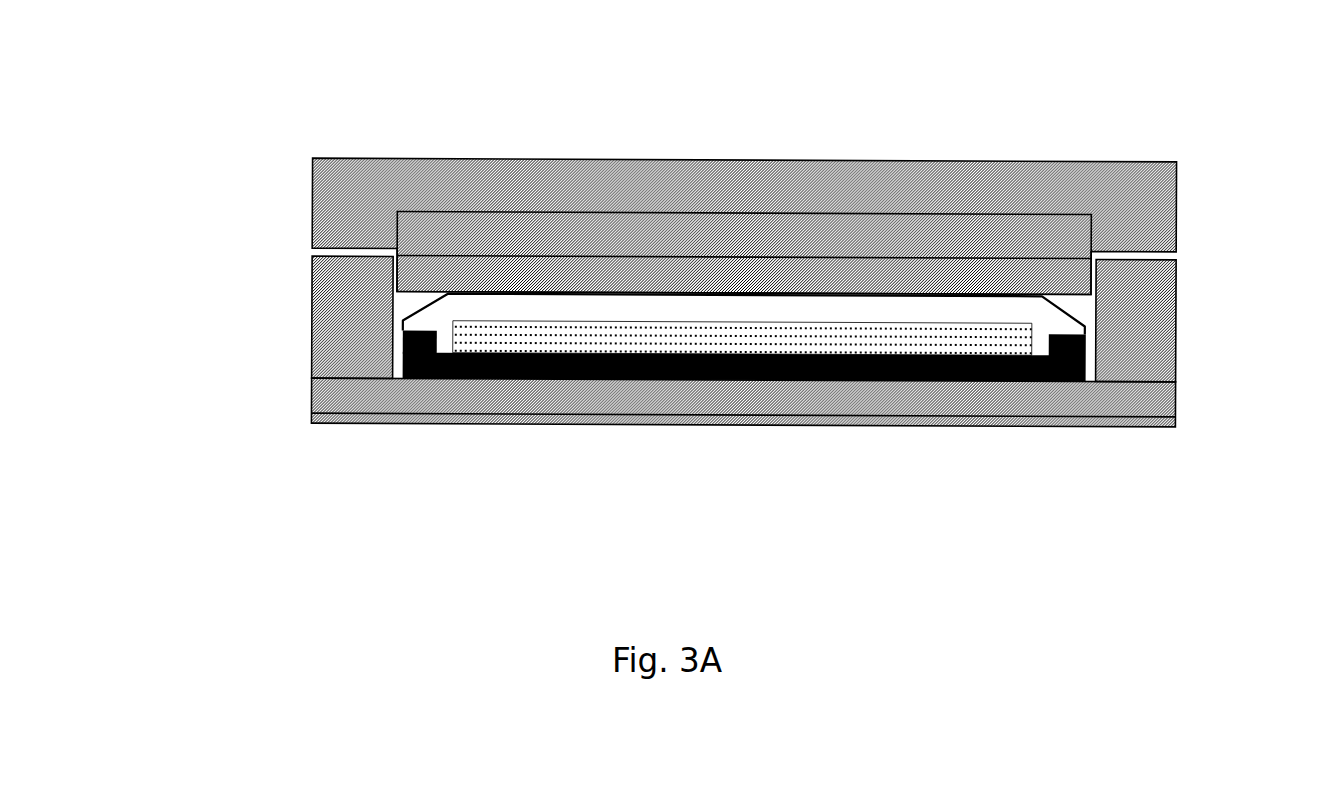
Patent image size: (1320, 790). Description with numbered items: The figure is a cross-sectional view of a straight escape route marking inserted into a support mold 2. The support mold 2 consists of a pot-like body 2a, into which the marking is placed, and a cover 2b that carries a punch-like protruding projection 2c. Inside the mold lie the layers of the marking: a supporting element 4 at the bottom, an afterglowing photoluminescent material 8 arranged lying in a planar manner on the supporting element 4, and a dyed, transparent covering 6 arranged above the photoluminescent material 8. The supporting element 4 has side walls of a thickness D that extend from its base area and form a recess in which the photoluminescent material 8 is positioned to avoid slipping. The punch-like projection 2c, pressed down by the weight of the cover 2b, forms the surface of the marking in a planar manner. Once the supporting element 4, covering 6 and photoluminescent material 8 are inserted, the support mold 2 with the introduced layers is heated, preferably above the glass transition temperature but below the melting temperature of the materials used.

The support mold 2 is at (683, 278).
The pot-like body 2a is at (322, 425).
The cover 2b is at (425, 157).
The punch-like projection 2c is at (1087, 282).
The supporting element 4 is at (837, 380).
The dyed, transparent covering 6 is at (677, 310).
The photoluminescent material 8 is at (983, 340).
The thickness of the side walls D is at (444, 345).